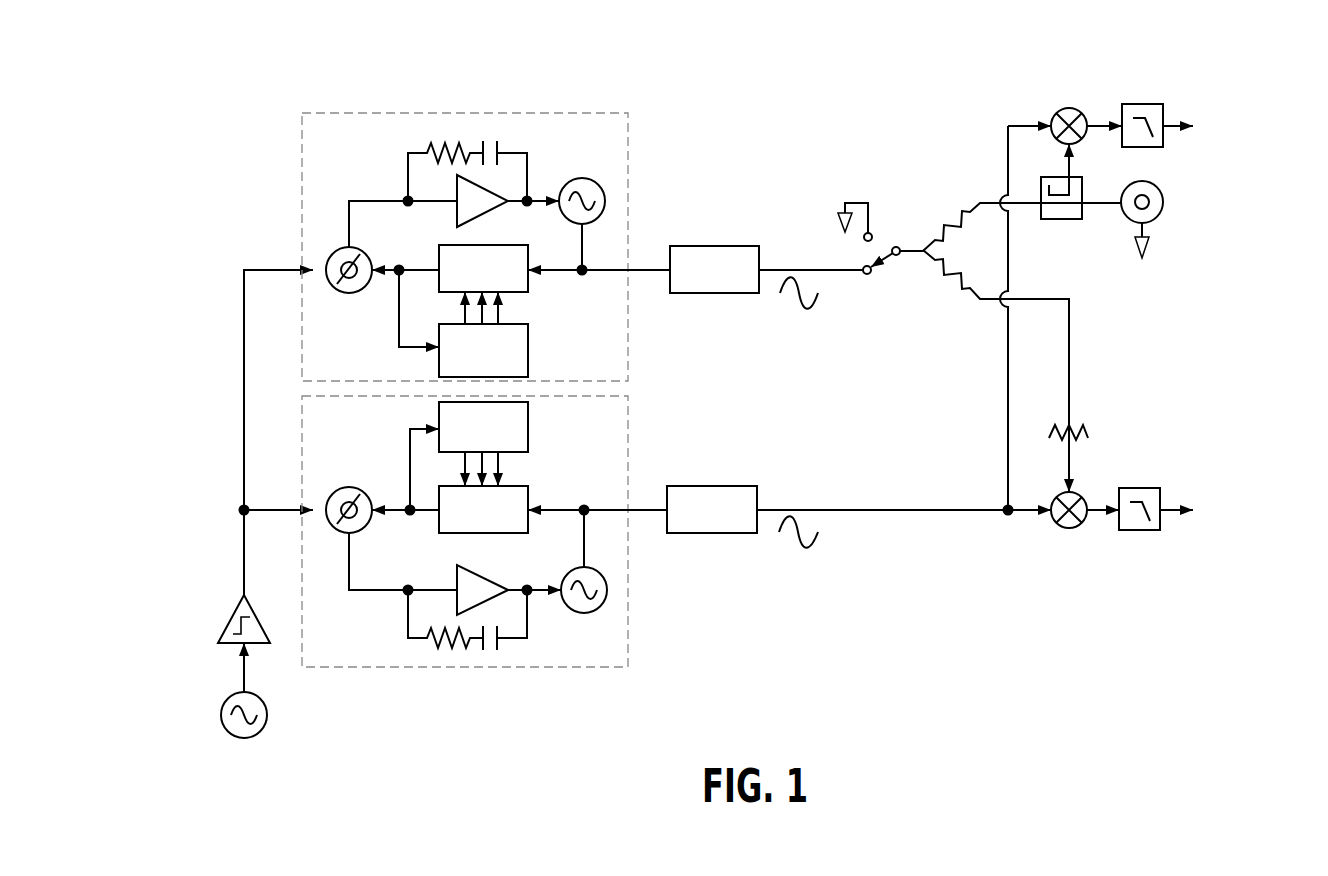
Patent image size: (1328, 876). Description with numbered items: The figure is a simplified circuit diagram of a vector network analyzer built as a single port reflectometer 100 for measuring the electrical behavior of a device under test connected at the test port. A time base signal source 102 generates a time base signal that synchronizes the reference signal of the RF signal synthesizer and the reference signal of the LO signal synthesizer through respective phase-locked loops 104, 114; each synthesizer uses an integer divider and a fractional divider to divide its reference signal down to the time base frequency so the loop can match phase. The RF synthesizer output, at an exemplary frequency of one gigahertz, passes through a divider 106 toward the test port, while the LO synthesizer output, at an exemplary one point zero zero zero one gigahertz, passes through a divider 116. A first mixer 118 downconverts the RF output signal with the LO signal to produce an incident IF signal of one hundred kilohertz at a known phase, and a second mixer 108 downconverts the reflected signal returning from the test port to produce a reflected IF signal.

The single port reflectometer 100 is at (842, 72).
The time base signal source 102 is at (191, 690).
The phase-locked loop of RF signal synthesizer 104 is at (507, 113).
The RF frequency divider 106 is at (718, 243).
The second mixer 108 is at (1067, 103).
The phase-locked loop of LO signal synthesizer 114 is at (437, 668).
The LO frequency divider 116 is at (703, 534).
The first mixer 118 is at (1065, 530).